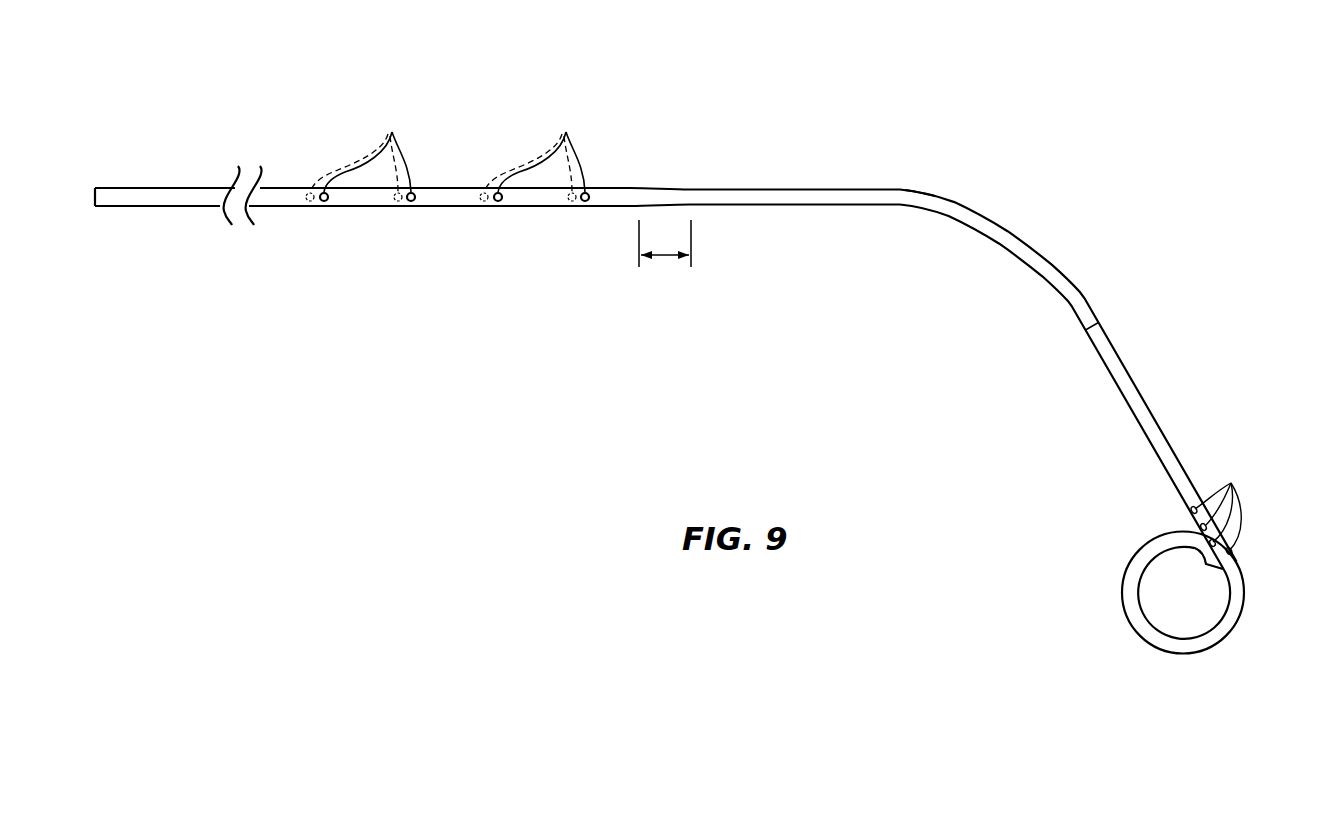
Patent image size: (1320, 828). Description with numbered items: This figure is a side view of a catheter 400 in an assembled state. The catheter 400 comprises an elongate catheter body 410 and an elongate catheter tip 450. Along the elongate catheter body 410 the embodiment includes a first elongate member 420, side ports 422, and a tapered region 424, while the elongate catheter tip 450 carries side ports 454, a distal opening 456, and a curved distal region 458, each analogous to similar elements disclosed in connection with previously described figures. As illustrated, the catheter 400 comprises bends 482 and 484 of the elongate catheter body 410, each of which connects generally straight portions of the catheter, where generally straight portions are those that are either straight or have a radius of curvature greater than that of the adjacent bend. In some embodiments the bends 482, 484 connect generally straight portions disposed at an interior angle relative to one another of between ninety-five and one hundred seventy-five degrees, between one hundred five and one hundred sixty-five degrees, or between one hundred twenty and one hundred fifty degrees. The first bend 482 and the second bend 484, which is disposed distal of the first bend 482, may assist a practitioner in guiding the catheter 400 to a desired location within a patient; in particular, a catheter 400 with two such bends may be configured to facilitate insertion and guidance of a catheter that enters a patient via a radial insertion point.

The catheter 400 is at (1030, 123).
The elongate catheter body 410 is at (292, 149).
The first elongate member 420 is at (285, 203).
The side ports 422 is at (392, 132).
The tapered region 424 is at (666, 259).
The elongate catheter tip 450 is at (1213, 430).
The side ports 454 is at (1231, 483).
The distal opening 456 is at (1217, 571).
The curved distal region 458 is at (1177, 658).
The first bend 482 is at (927, 210).
The second bend 484 is at (1050, 284).